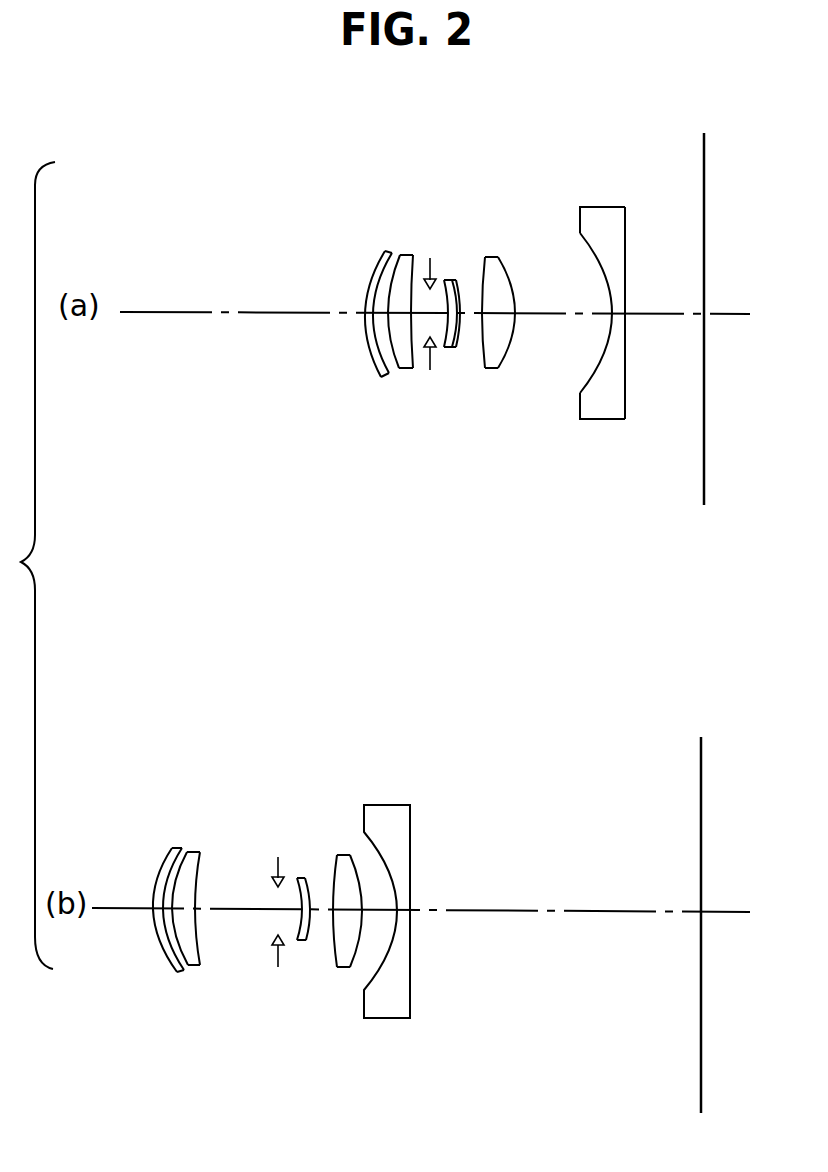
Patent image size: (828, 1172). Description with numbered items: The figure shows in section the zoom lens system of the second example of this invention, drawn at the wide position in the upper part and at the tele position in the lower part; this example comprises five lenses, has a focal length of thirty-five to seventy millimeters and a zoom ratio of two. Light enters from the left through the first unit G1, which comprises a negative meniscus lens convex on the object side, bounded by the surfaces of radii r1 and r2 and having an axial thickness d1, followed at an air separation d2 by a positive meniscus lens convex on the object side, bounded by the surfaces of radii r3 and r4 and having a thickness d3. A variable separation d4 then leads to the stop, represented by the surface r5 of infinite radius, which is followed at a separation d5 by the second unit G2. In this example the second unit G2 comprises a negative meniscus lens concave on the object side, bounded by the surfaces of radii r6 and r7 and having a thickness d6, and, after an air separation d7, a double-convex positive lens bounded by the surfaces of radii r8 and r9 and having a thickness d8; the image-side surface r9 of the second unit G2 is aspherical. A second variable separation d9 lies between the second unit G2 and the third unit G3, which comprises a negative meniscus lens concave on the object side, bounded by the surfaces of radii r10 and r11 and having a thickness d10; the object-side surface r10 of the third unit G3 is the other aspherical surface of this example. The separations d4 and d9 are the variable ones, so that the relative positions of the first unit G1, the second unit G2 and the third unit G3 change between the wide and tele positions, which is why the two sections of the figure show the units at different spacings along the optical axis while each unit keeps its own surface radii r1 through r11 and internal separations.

The first unit G1 is at (418, 178).
The second unit G2 is at (508, 178).
The third unit G3 is at (628, 178).
The radius of curvature of the first lens surface r1 is at (376, 268).
The radius of curvature of the second lens surface r2 is at (380, 279).
The radius of curvature of the third lens surface r3 is at (399, 256).
The radius of curvature of the fourth lens surface r4 is at (414, 280).
The radius of curvature of the fifth surface (stop) r5 is at (444, 282).
The radius of curvature of the sixth lens surface r6 is at (461, 291).
The radius of curvature of the seventh lens surface r7 is at (458, 360).
The radius of curvature of the eighth lens surface r8 is at (486, 257).
The radius of curvature of the ninth lens surface r9 is at (511, 262).
The radius of curvature of the tenth lens surface r10 is at (593, 258).
The radius of curvature of the eleventh lens surface r11 is at (645, 360).
The separation between adjacent lens surfaces d1 is at (357, 281).
The separation between adjacent lens surfaces d2 is at (371, 327).
The separation between adjacent lens surfaces d3 is at (409, 276).
The separation between adjacent lens surfaces d4 is at (412, 326).
The separation between adjacent lens surfaces d5 is at (455, 313).
The separation between adjacent lens surfaces d6 is at (463, 288).
The separation between adjacent lens surfaces d7 is at (471, 315).
The separation between adjacent lens surfaces d8 is at (510, 271).
The separation between adjacent lens surfaces d9 is at (547, 310).
The separation between adjacent lens surfaces d10 is at (606, 301).